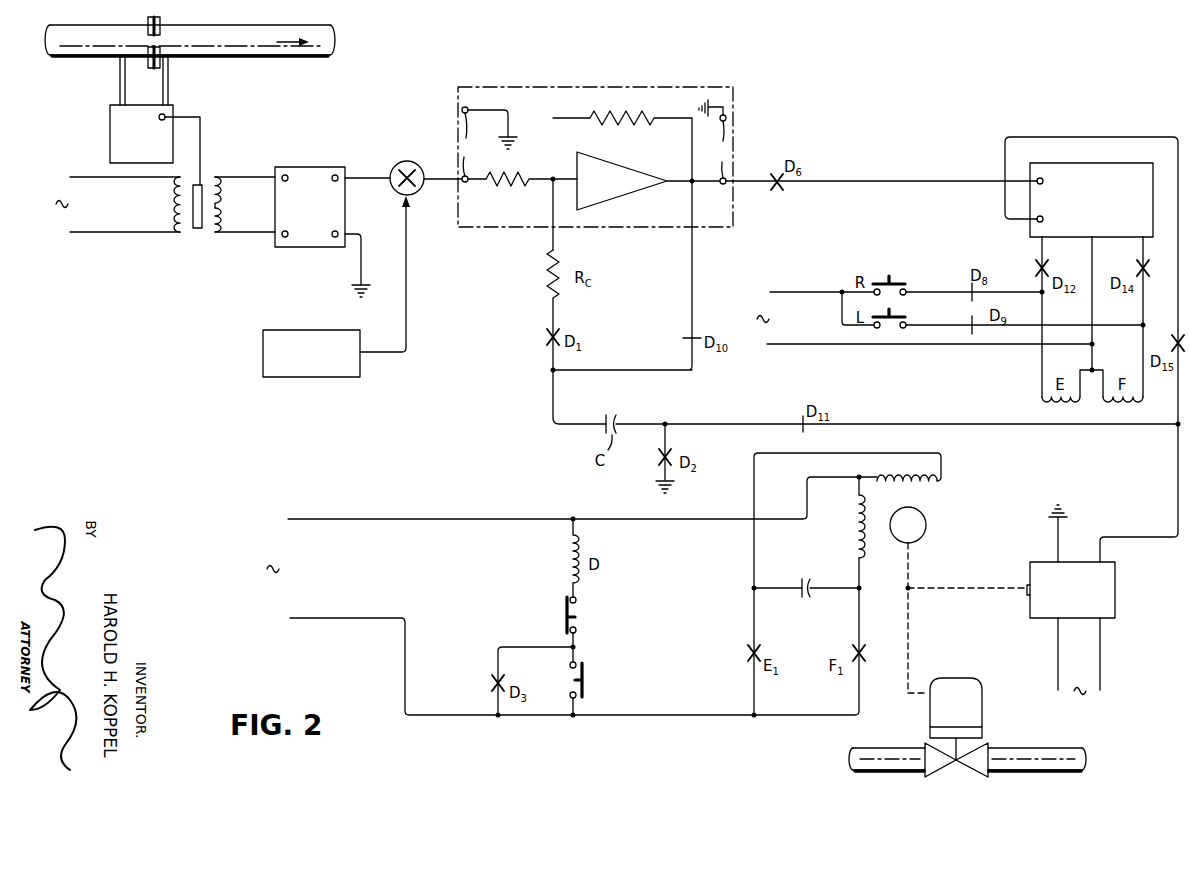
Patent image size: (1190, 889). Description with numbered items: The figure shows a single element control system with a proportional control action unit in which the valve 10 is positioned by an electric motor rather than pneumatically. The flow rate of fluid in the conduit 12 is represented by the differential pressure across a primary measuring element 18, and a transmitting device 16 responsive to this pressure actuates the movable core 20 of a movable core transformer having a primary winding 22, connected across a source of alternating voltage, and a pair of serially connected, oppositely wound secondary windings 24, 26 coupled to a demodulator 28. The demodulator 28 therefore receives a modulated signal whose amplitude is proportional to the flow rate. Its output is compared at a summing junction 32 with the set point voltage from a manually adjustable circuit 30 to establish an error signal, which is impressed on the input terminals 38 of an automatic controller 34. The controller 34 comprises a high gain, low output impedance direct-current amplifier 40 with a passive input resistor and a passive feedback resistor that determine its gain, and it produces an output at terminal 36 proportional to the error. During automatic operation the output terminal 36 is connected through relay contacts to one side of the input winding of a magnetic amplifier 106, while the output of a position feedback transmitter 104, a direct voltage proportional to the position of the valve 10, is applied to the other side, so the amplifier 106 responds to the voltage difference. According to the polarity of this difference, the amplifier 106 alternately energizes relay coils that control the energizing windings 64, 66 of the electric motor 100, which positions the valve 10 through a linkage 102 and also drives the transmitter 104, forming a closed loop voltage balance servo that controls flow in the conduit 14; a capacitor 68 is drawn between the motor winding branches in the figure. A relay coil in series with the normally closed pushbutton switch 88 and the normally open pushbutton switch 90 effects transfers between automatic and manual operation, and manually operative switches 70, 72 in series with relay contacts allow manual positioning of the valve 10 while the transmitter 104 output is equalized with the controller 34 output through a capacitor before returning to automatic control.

The valve 10 is at (982, 707).
The conduit 12 is at (280, 60).
The conduit 14 is at (1040, 747).
The transmitting device 16 is at (110, 133).
The primary measuring element 18 is at (160, 48).
The movable core 20 is at (201, 185).
The primary winding 22 is at (173, 205).
The secondary winding 24 is at (222, 192).
The secondary winding 26 is at (220, 229).
The demodulator 28 is at (298, 215).
The manually adjustable circuit 30 is at (285, 378).
The summing junction 32 is at (412, 161).
The automatic controller 34 is at (595, 193).
The output terminal 36 is at (722, 163).
The input terminals 38 is at (489, 144).
The D.-C. amplifier 40 is at (633, 187).
The energizing winding 64 is at (857, 530).
The energizing winding 66 is at (936, 476).
The capacitor 68 is at (809, 598).
The manually operative switch 70 is at (892, 276).
The manually operative switch 72 is at (905, 318).
The pushbutton switch 88 is at (580, 611).
The pushbutton switch 90 is at (586, 668).
The electric motor 100 is at (926, 520).
The linkage 102 is at (912, 635).
The position feedback transmitter 104 is at (1117, 605).
The magnetic amplifier 106 is at (1117, 163).